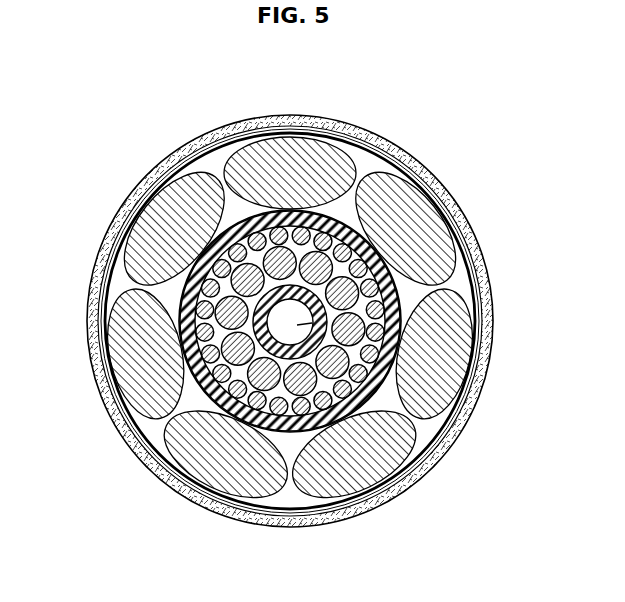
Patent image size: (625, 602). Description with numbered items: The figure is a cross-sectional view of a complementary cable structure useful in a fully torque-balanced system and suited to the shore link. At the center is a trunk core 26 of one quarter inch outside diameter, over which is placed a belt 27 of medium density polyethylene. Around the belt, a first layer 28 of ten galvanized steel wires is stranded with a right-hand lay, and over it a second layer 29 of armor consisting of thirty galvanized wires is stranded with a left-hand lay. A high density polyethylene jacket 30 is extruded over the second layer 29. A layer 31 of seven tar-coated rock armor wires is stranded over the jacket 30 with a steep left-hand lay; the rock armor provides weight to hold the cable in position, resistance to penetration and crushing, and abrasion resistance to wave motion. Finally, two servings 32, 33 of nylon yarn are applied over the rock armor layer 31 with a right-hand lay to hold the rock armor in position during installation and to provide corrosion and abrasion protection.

The trunk core 26 is at (325, 298).
The belt 27 is at (355, 230).
The first layer 28 is at (405, 331).
The second layer 29 is at (405, 348).
The jacket 30 is at (372, 145).
The layer of rock armor wires 31 is at (447, 378).
The first serving 32 is at (110, 233).
The second serving 33 is at (104, 270).